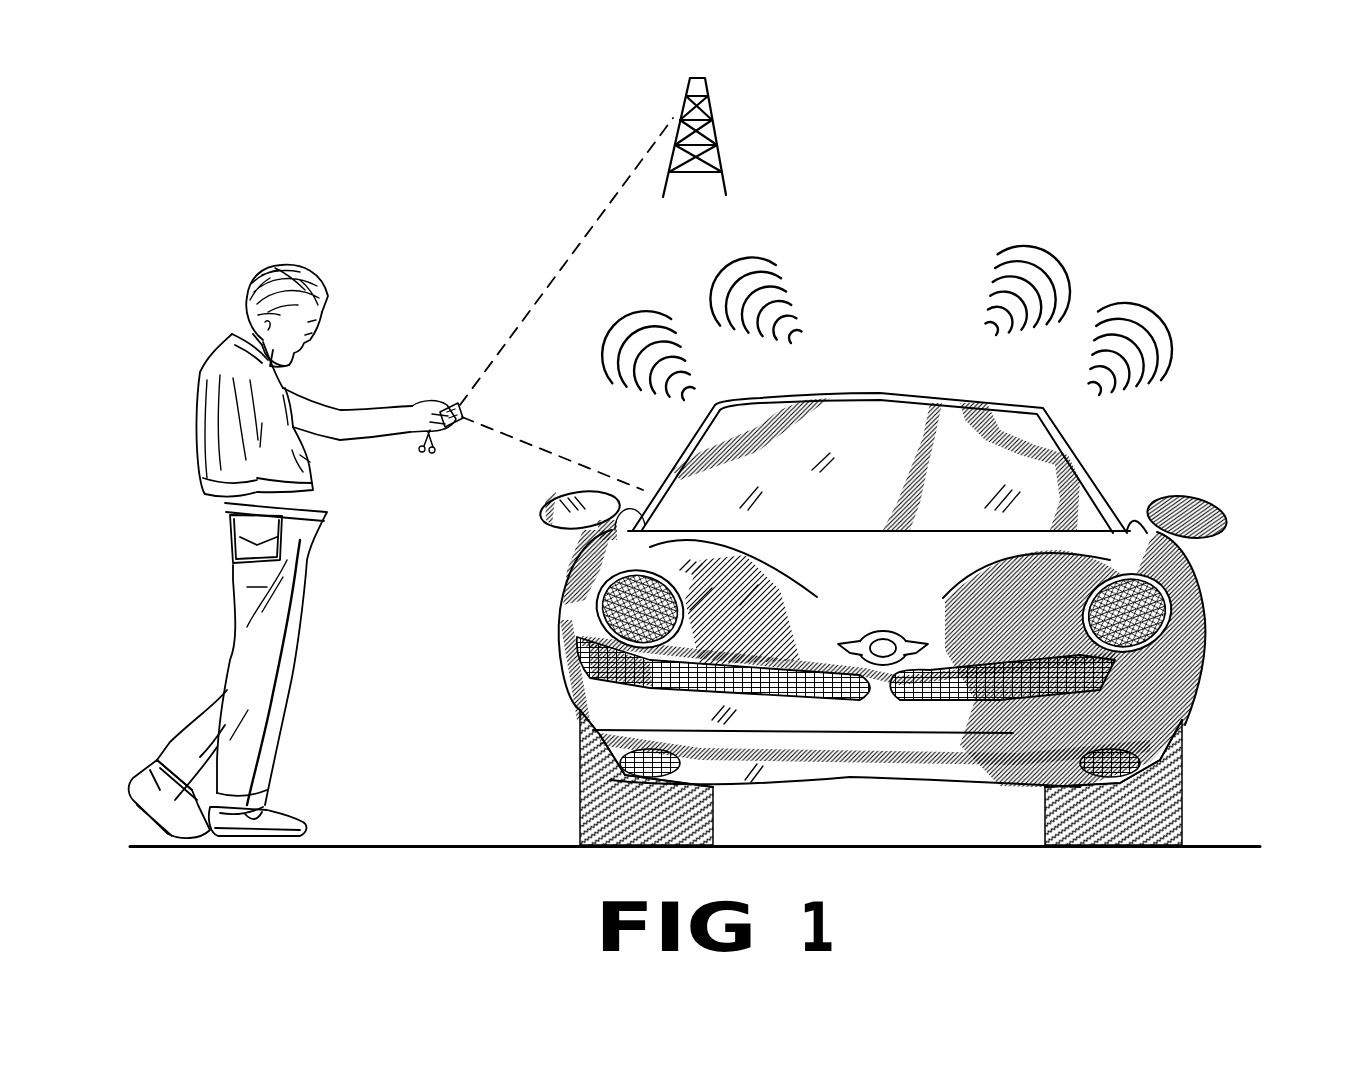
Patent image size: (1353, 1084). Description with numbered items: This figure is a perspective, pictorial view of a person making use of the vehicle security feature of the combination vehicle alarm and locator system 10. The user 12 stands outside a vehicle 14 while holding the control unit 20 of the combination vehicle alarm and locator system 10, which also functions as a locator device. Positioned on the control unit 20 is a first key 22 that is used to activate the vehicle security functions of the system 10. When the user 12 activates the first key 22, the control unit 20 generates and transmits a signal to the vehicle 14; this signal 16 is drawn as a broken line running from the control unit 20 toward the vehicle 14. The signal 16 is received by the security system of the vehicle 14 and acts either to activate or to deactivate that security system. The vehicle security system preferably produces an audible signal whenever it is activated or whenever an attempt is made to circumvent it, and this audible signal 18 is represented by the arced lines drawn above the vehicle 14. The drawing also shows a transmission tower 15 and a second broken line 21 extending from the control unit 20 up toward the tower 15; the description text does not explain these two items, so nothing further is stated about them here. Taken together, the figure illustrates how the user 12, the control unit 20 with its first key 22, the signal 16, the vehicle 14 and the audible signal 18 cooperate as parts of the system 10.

The combination vehicle alarm and locator system 10 is at (403, 312).
The user 12 is at (318, 548).
The vehicle 14 is at (1208, 655).
The base station tower 15 is at (713, 127).
The signal 16 is at (520, 445).
The audible signal 18 is at (710, 293).
The control unit 20 is at (448, 385).
The signal to base station 21 is at (581, 238).
The first key 22 is at (450, 428).